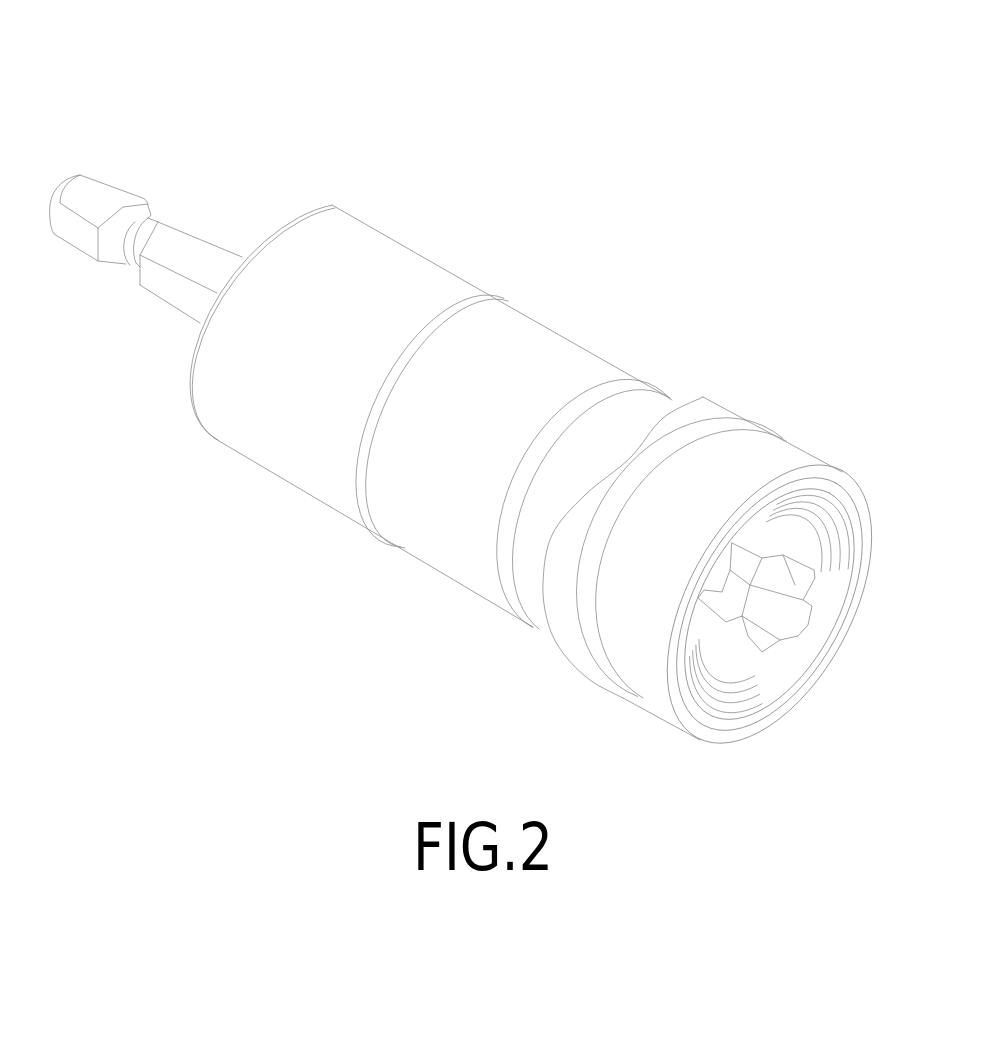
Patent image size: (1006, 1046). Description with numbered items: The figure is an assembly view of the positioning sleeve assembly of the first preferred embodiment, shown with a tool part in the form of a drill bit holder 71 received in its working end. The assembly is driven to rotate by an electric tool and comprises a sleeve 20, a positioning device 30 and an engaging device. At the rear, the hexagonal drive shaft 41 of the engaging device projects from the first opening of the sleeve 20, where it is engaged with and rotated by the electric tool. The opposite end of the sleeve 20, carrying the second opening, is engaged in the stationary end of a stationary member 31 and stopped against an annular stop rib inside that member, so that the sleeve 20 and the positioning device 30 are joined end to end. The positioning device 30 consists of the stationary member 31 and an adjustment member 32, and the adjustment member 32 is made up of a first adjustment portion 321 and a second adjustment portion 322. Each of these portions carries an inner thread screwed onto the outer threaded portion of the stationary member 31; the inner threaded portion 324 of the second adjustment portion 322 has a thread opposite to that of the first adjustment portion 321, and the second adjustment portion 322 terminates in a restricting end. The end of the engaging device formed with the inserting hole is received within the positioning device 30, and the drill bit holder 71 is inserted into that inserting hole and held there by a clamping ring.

The sleeve 20 is at (258, 456).
The positioning device 30 is at (516, 646).
The stationary member 31 is at (557, 360).
The adjustment member 32 is at (878, 349).
The first adjustment portion 321 is at (722, 408).
The second adjustment portion 322 is at (783, 453).
The inner threaded portion 324 is at (847, 555).
The drive shaft 41 is at (93, 207).
The drill bit holder 71 is at (755, 620).